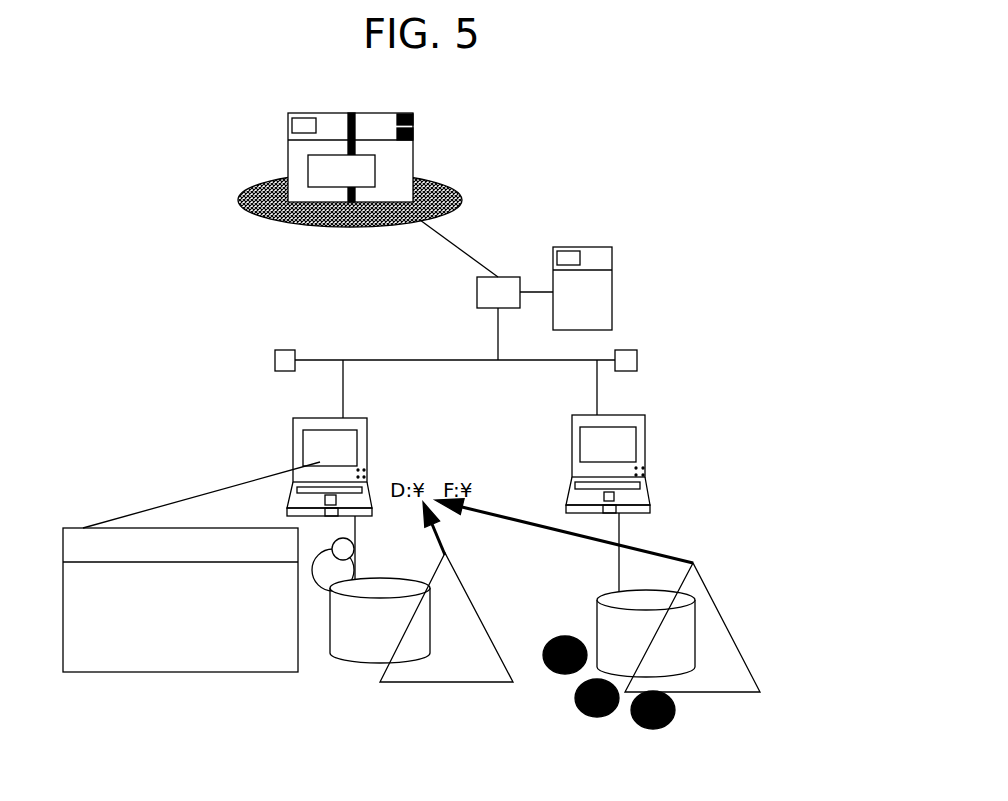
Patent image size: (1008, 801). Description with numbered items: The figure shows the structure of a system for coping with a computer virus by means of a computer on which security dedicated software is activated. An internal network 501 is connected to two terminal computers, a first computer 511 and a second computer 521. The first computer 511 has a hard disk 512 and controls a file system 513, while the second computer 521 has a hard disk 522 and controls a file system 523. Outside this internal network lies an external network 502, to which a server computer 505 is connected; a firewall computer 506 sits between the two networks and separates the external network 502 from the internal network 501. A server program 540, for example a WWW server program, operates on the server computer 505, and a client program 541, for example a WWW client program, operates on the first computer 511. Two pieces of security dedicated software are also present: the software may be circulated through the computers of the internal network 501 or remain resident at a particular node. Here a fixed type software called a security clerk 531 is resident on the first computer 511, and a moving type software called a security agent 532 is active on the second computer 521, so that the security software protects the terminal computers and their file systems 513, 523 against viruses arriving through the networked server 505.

The internal network 501 is at (378, 358).
The external network 502 is at (458, 242).
The computer (server) 505 is at (413, 152).
The computer (firewall) 506 is at (597, 247).
The computer (terminal device) 511 is at (357, 417).
The hard disk 512 is at (360, 660).
The file system 513 is at (463, 607).
The computer (terminal device) 521 is at (645, 425).
The hard disk 522 is at (650, 597).
The file system 523 is at (715, 628).
The security dedicated software (security clerk) 531 is at (355, 553).
The security dedicated software (security agent) 532 is at (676, 710).
The server program 540 is at (341, 172).
The client program 541 is at (83, 528).